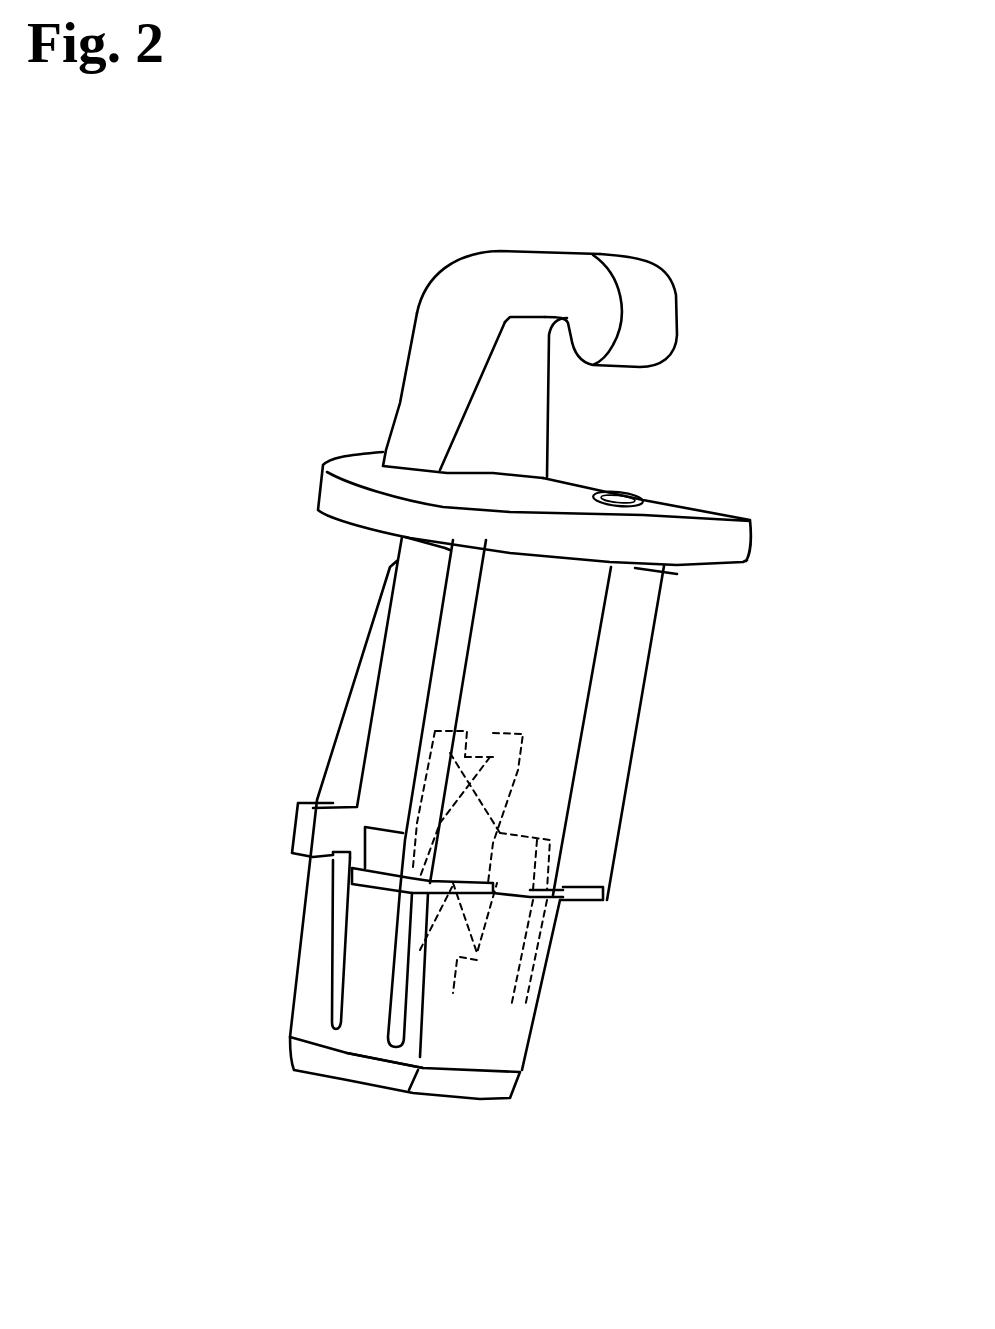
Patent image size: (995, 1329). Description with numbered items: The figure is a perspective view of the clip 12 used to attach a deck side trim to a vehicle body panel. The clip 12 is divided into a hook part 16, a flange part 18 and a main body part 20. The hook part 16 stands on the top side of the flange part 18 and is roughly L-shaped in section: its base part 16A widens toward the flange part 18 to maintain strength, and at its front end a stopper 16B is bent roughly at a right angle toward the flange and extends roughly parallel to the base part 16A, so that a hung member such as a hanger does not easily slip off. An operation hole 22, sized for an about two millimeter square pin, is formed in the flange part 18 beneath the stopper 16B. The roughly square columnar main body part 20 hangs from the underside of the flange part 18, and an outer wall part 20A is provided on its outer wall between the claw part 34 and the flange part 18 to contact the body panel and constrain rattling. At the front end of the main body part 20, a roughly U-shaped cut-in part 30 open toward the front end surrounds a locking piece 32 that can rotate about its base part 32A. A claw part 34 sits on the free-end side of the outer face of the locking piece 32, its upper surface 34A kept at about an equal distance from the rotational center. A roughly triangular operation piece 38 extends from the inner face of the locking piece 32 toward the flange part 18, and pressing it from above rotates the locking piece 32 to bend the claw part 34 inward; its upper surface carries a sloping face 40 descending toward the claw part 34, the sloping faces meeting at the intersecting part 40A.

The clip 12 is at (810, 243).
The hook part 16 is at (557, 234).
The base part 16A is at (417, 388).
The stopper 16B is at (665, 332).
The flange part 18 is at (773, 547).
The main body part 20 is at (650, 789).
The outer wall part 20A is at (368, 675).
The operation hole 22 is at (620, 493).
The cut-in part 30 is at (320, 1012).
The locking piece 32 is at (316, 992).
The base part 32A is at (358, 1022).
The claw part 34 is at (367, 915).
The upper surface 34A is at (375, 880).
The operation piece 38 is at (495, 785).
The sloping face 40 is at (470, 773).
The intersecting part 40A is at (478, 757).